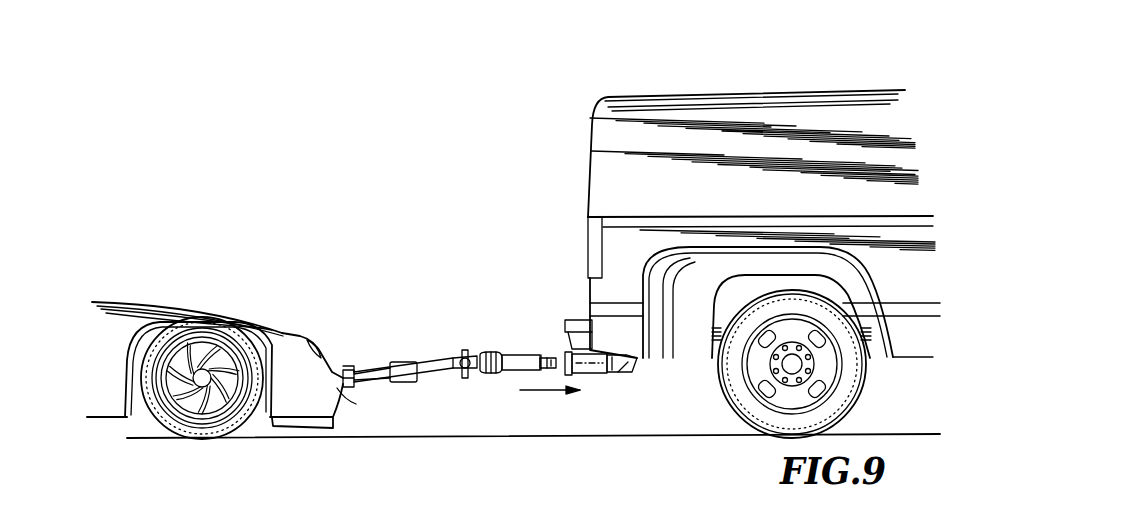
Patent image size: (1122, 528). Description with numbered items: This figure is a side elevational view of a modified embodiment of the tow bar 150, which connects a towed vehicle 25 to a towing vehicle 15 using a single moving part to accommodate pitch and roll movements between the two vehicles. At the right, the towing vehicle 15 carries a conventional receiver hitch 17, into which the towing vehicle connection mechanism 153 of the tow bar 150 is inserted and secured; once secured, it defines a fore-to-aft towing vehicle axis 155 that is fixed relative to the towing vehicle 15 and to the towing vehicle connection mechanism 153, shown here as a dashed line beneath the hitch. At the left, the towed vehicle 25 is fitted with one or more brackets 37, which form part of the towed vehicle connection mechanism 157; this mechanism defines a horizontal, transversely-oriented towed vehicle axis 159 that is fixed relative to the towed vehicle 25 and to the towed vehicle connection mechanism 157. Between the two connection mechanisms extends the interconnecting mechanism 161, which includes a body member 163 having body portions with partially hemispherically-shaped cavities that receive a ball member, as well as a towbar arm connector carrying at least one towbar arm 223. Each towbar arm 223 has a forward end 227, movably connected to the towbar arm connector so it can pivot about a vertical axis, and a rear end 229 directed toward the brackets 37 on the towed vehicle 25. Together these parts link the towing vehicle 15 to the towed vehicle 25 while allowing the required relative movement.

The towing vehicle 15 is at (603, 188).
The receiver hitch 17 is at (633, 362).
The towed vehicle 25 is at (250, 320).
The brackets 37 is at (347, 391).
The tow bar (modified embodiment) 150 is at (487, 378).
The towing vehicle connection mechanism 153 is at (534, 352).
The fore-to-aft towing vehicle axis 155 is at (617, 378).
The towed vehicle connection mechanism 157 is at (360, 388).
The towed vehicle axis 159 is at (347, 367).
The interconnecting mechanism 161 is at (484, 345).
The body member 163 is at (500, 354).
The towbar arm 223 is at (427, 343).
The forward end 227 is at (448, 352).
The rear end 229 is at (362, 370).